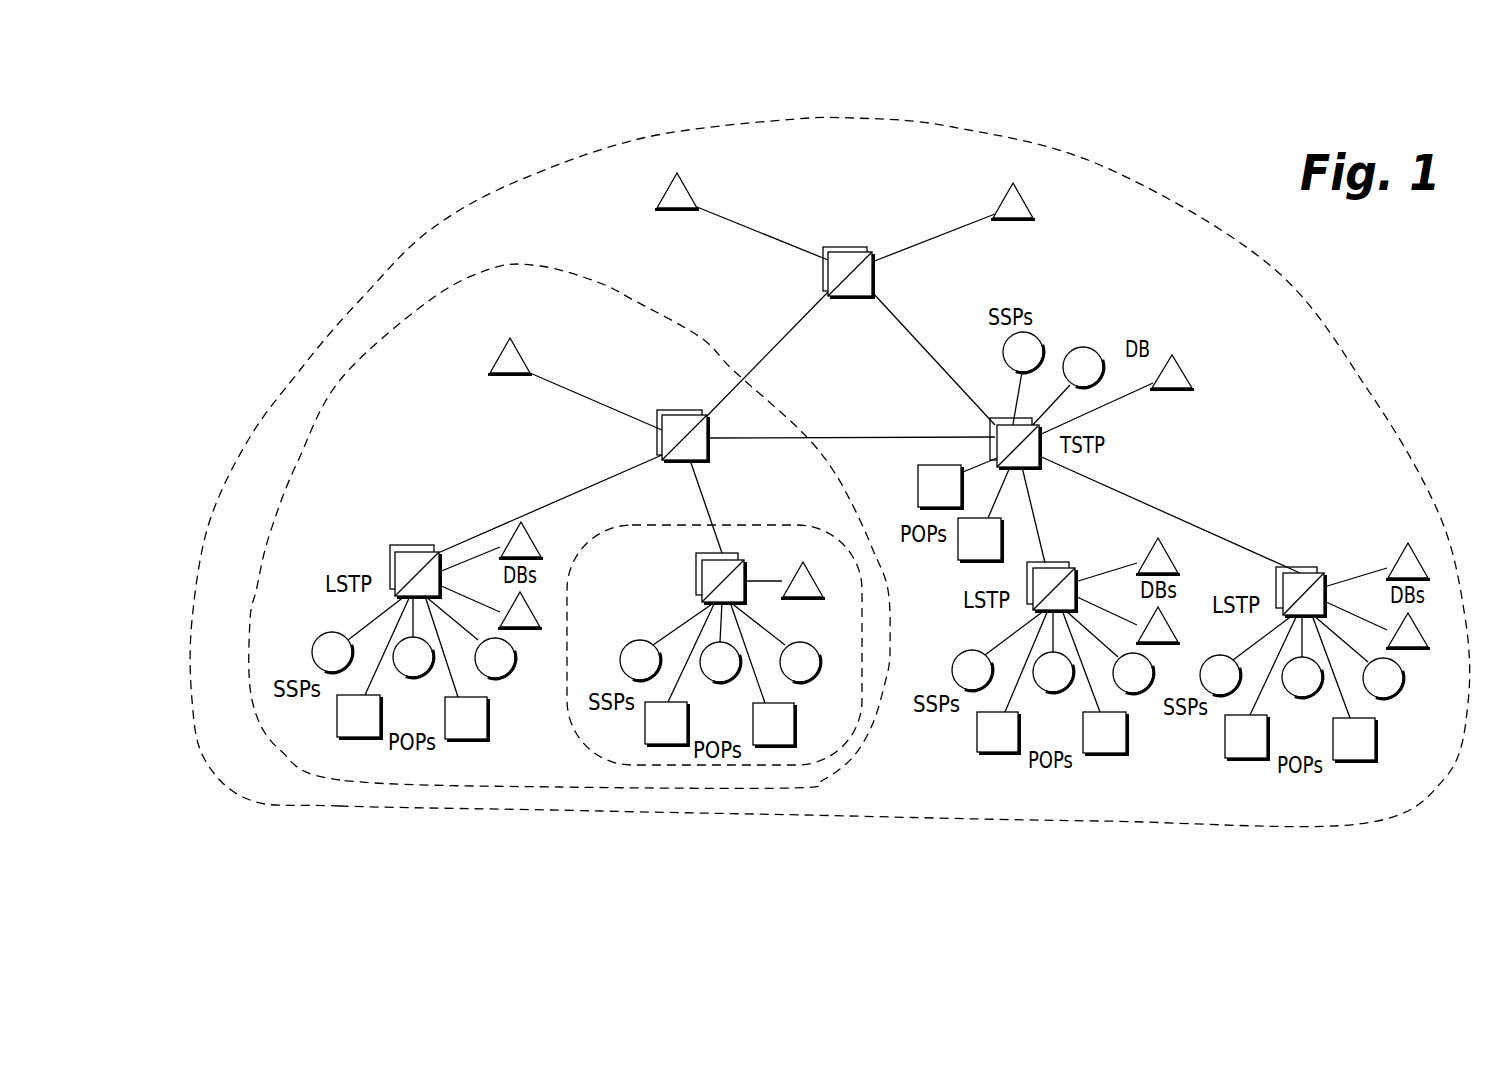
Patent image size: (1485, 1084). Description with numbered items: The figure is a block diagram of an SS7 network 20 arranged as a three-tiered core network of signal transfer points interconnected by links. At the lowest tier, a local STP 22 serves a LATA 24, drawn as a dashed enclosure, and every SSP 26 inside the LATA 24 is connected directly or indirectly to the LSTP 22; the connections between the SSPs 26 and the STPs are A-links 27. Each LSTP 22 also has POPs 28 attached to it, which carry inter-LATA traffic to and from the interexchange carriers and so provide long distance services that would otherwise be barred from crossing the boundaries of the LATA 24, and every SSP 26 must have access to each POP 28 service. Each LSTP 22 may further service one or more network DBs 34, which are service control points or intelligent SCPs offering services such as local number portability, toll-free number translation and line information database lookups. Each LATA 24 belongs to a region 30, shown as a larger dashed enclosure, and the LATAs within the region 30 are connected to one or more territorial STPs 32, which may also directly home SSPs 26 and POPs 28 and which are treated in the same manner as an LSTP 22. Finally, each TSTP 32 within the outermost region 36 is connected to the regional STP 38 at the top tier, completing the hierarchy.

The SS7 network 20 is at (420, 176).
The local STP (LSTP) 22 is at (712, 553).
The LATA 24 is at (734, 526).
The SSP 26 is at (822, 667).
The A-links 27 is at (676, 627).
The POP 28 is at (797, 725).
The region 30 is at (297, 461).
The territorial STP (TSTP) 32 is at (681, 410).
The network DB 34 is at (678, 212).
The region 36 is at (783, 120).
The regional STP (RSTP) 38 is at (853, 297).